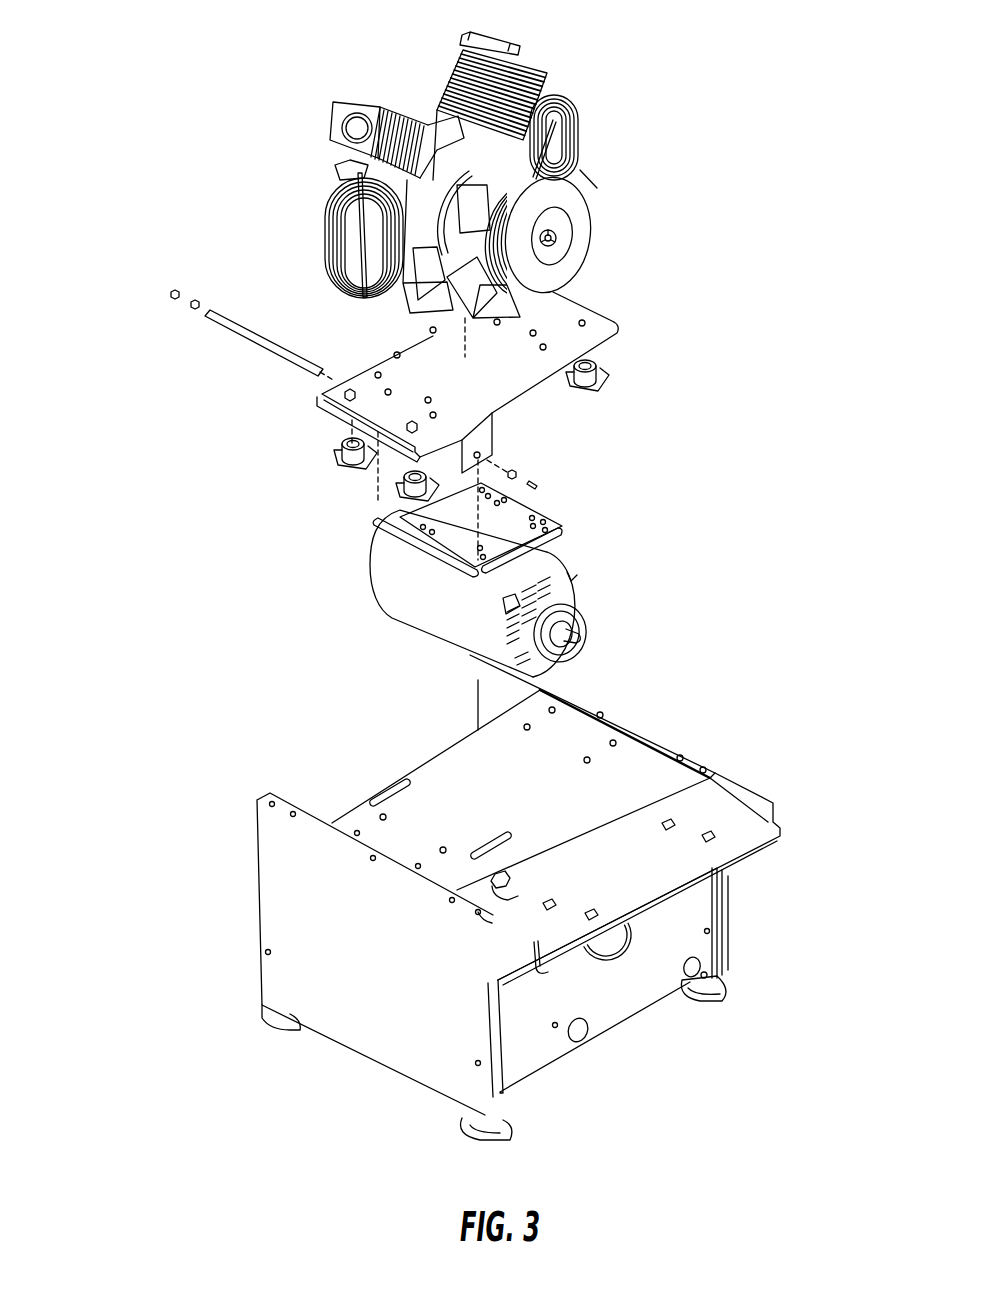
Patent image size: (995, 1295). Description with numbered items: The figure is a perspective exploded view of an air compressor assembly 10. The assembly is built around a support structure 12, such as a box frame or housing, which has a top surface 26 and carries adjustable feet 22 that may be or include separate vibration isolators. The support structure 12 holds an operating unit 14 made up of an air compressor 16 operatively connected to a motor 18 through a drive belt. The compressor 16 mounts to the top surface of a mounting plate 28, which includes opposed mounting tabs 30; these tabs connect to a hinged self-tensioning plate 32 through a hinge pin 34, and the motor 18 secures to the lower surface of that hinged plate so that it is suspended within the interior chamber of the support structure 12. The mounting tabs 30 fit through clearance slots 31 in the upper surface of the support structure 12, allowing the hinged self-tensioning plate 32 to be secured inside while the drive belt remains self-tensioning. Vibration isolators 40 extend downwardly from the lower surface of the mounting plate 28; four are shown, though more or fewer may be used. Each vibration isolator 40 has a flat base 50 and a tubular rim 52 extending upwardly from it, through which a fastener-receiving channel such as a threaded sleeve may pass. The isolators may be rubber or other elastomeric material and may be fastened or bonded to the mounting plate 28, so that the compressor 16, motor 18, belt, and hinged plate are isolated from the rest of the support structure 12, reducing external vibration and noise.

The air compressor assembly 10 is at (145, 86).
The support structure 12 is at (372, 1022).
The operating unit 14 is at (316, 70).
The air compressor 16 is at (567, 110).
The motor 18 is at (580, 593).
The adjustable feet 22 is at (728, 992).
The top surface 26 is at (720, 800).
The mounting plate 28 is at (612, 318).
The mounting tabs 30 is at (492, 443).
The clearance slots 31 is at (492, 832).
The hinged self-tensioning plate 32 is at (560, 528).
The hinge pin 34 is at (218, 325).
The vibration isolators 40 is at (604, 377).
The flat base 50 is at (335, 461).
The tubular rim 52 is at (343, 440).